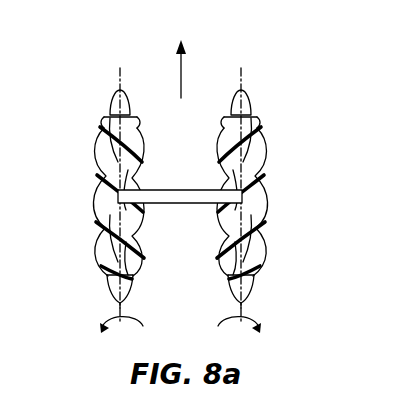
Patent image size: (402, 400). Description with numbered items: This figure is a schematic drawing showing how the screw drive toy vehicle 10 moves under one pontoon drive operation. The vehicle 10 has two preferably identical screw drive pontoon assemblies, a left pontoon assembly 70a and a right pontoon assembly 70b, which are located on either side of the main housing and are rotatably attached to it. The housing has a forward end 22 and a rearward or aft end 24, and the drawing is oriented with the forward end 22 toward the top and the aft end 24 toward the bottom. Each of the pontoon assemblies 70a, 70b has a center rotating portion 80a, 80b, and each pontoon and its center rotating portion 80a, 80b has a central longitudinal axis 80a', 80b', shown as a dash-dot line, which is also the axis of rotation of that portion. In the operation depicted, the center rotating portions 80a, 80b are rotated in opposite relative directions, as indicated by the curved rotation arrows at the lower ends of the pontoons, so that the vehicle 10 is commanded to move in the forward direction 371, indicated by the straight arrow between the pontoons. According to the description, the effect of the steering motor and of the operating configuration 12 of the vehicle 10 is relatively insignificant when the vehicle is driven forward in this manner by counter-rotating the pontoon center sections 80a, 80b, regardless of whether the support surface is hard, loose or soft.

The screw drive toy vehicle 10 is at (230, 46).
The operating configuration 12 is at (194, 37).
The forward end 22 is at (194, 135).
The rearward or aft end 24 is at (194, 317).
The left pontoon assembly 70a is at (104, 106).
The right pontoon assembly 70b is at (259, 104).
The center rotating portion 80a is at (84, 203).
The center rotating portion 80b is at (275, 203).
The central longitudinal axis 80a' is at (77, 189).
The central longitudinal axis 80b' is at (280, 188).
The forward direction 371 is at (180, 66).